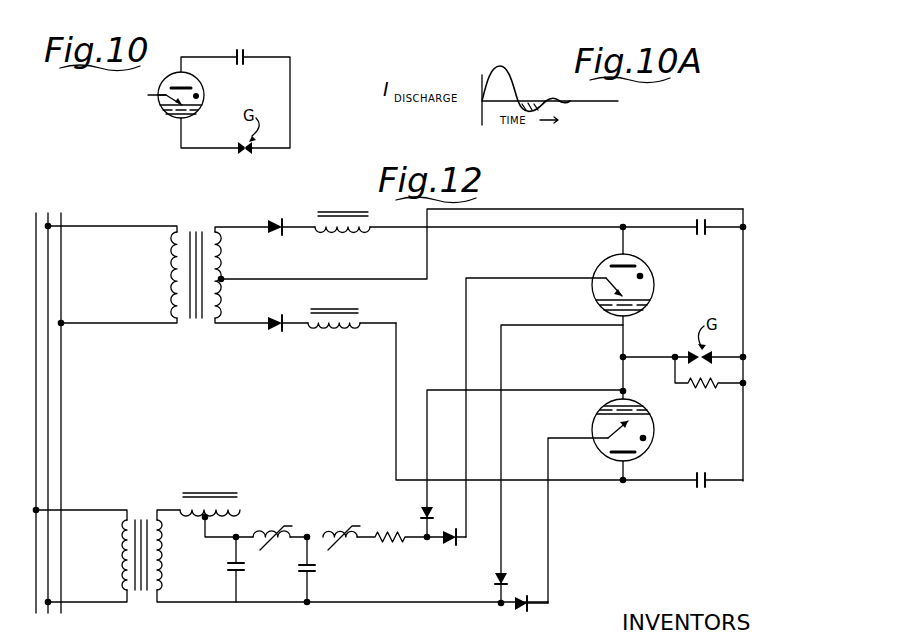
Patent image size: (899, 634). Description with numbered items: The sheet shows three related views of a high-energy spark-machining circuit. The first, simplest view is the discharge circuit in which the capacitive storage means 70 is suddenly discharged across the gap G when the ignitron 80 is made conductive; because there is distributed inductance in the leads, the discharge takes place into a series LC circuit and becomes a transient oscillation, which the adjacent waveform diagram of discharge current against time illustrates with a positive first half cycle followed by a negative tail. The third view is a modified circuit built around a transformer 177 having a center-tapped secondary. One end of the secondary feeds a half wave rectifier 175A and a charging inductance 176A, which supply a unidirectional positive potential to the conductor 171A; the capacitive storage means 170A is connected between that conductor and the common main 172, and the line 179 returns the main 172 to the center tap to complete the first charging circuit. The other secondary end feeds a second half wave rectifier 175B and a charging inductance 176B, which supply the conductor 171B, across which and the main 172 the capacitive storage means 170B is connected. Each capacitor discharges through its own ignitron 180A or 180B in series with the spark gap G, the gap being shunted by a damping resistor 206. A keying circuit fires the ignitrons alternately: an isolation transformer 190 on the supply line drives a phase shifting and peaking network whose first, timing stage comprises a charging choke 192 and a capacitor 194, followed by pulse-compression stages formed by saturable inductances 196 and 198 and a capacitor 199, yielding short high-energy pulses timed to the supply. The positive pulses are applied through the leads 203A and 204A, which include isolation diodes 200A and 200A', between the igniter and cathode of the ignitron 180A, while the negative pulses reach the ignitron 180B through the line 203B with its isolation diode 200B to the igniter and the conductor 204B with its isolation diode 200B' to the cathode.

In FIG. 10, the capacitive storage means 70 is at (241, 50).
In FIG. 10, the ignitron 80 is at (164, 93).
In FIG. 12, the transformer 177 is at (198, 221).
In FIG. 12, the half wave rectifier 175A is at (268, 218).
In FIG. 12, the second half wave rectifier 175B is at (292, 298).
In FIG. 12, the charging inductance 176A is at (356, 198).
In FIG. 12, the charging inductance 176B is at (334, 314).
In FIG. 12, the line 179 is at (551, 209).
In FIG. 12, the conductor 171A is at (504, 230).
In FIG. 12, the conductor 171B is at (574, 482).
In FIG. 12, the capacitive storage means 170A is at (698, 236).
In FIG. 12, the capacitive storage means 170B is at (708, 462).
In FIG. 12, the ignitron 180A is at (654, 290).
In FIG. 12, the ignitron 180B is at (650, 428).
In FIG. 12, the spark machining main 172 is at (743, 276).
In FIG. 12, the damping resistor 206 is at (712, 388).
In FIG. 12, the lead 203A is at (466, 300).
In FIG. 12, the line 203B is at (548, 530).
In FIG. 12, the lead 204A is at (501, 412).
In FIG. 12, the conductor 204B is at (428, 391).
In FIG. 12, the isolation diode 200A is at (436, 552).
In FIG. 12, the isolation diode 200B is at (560, 589).
In FIG. 12, the isolation diode 200A' is at (473, 589).
In FIG. 12, the isolation diode 200B' is at (400, 502).
In FIG. 12, the isolation transformer 190 is at (138, 504).
In FIG. 12, the charging choke 192 is at (206, 506).
In FIG. 12, the capacitor 194 is at (228, 566).
In FIG. 12, the saturable inductance 196 is at (264, 524).
In FIG. 12, the saturable inductance 198 is at (324, 538).
In FIG. 12, the capacitor 199 is at (316, 568).